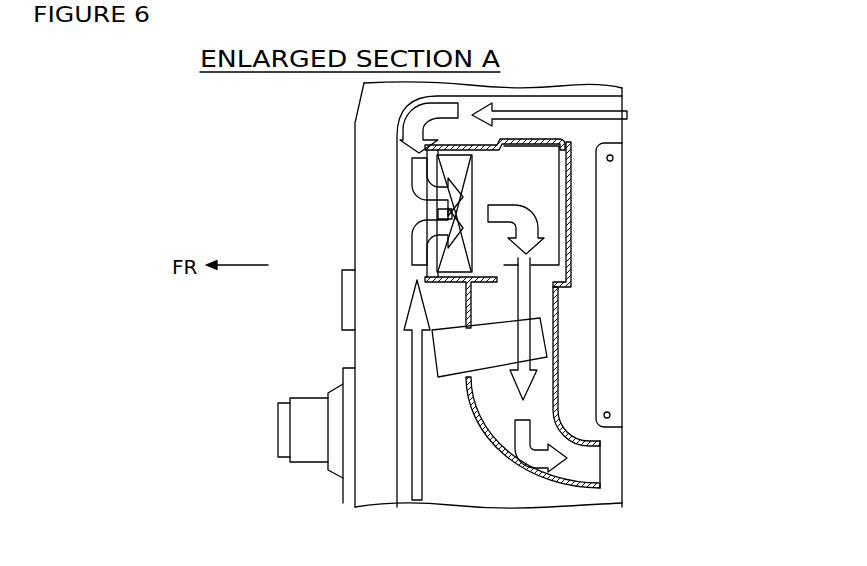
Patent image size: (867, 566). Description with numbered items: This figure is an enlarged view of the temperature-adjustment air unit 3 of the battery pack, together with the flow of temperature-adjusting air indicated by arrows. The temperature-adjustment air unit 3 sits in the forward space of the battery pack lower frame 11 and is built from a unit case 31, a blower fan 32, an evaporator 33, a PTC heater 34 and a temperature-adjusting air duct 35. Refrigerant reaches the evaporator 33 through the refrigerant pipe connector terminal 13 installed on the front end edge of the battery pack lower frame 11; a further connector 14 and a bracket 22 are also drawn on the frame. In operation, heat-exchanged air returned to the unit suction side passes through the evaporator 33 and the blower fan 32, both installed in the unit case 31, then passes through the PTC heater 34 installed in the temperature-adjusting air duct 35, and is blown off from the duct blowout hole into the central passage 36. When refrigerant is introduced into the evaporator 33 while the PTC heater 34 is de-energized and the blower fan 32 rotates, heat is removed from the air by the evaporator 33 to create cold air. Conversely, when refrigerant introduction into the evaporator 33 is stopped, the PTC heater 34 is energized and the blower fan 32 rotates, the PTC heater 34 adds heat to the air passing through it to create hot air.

The temperature-adjustment air unit 3 is at (577, 229).
The battery pack lower frame 11 is at (371, 122).
The refrigerant pipe connector terminal 13 is at (345, 311).
The connector 14 is at (311, 406).
The bracket 22 is at (609, 278).
The unit case 31 is at (523, 142).
The blower fan 32 is at (532, 183).
The evaporator 33 is at (448, 214).
The PTC heater 34 is at (488, 351).
The temperature-adjusting air duct 35 is at (558, 362).
The central passage 36 is at (610, 463).